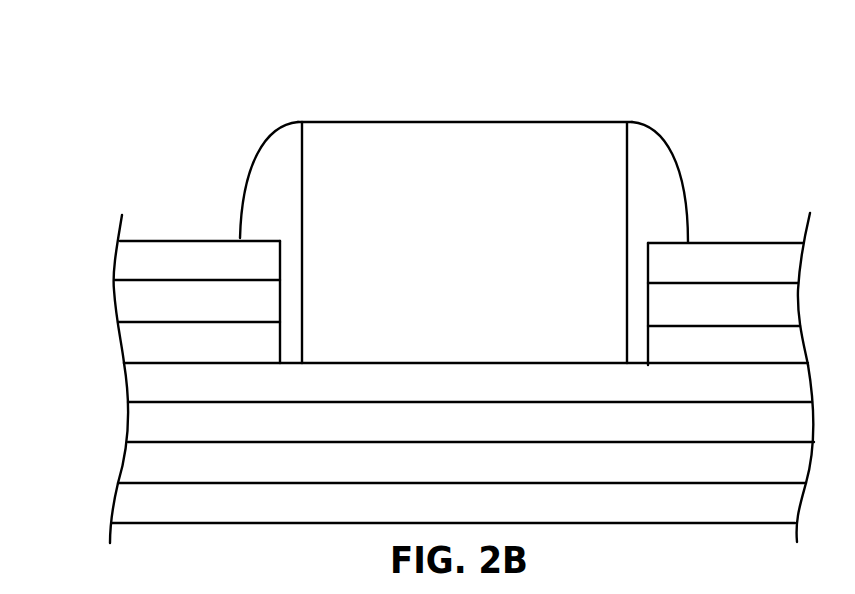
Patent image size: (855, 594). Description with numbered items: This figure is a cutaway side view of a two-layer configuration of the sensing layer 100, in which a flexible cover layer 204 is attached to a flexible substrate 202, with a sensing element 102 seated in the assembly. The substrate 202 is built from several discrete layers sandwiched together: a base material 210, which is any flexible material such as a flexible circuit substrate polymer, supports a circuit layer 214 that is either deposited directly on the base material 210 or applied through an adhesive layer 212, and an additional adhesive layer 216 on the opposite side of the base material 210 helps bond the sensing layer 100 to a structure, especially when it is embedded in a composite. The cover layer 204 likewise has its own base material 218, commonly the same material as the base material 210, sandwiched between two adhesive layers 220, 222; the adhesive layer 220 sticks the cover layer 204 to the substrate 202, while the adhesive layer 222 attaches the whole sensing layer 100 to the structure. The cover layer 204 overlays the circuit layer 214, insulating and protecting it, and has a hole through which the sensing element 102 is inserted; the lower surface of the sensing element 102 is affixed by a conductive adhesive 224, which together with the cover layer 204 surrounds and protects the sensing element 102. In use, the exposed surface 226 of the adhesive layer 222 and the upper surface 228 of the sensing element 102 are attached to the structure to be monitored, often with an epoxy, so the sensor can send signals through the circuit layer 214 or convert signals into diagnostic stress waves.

The sensing layer 100 is at (110, 37).
The sensing element 102 is at (465, 225).
The substrate 202 is at (80, 363).
The cover layer 204 is at (104, 240).
The base material 210 is at (471, 459).
The adhesive layer 212 is at (470, 419).
The circuit layer 214 is at (466, 380).
The additional adhesive layer 216 is at (459, 503).
The base material 218 is at (197, 299).
The adhesive layer 220 is at (199, 340).
The adhesive layer 222 is at (200, 259).
The conductive adhesive 224 is at (655, 142).
The exposed surface 226 is at (712, 243).
The upper surface 228 is at (464, 122).